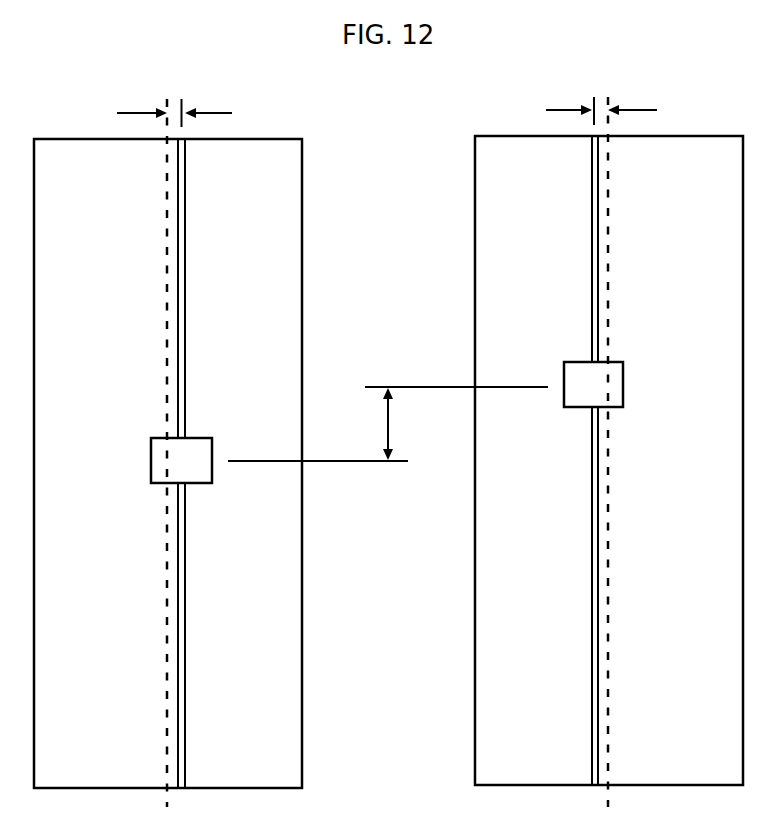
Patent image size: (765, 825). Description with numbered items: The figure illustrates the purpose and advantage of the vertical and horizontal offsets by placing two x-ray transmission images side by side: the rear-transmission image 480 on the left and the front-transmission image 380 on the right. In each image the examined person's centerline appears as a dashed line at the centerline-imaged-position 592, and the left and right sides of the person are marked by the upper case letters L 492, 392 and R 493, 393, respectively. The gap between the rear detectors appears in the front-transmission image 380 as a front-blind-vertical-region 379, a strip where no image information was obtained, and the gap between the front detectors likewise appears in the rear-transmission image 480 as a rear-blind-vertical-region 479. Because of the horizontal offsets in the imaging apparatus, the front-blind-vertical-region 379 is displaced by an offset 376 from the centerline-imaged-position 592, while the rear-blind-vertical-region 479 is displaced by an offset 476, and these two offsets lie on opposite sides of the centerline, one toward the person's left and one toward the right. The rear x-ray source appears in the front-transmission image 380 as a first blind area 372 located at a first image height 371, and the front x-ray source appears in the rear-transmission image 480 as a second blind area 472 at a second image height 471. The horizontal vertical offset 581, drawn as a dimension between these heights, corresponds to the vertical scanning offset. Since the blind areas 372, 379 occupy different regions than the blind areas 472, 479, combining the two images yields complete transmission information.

The rear-transmission image 480 is at (308, 214).
The upper case L 492 is at (64, 168).
The upper case R 493 is at (258, 173).
The rear-blind-vertical-region 479 is at (189, 309).
The centerline-imaged-position 592 is at (166, 93).
The offset 476 is at (197, 113).
The second blind area 472 is at (142, 448).
The second image height 471 is at (415, 462).
The first image height 371 is at (357, 386).
The horizontal vertical offset 581 is at (378, 442).
The front-transmission image 380 is at (462, 238).
The upper case L 392 is at (513, 168).
The upper case R 393 is at (700, 166).
The front-blind-vertical-region 379 is at (585, 308).
The offset 376 is at (625, 111).
The first blind area 372 is at (634, 370).